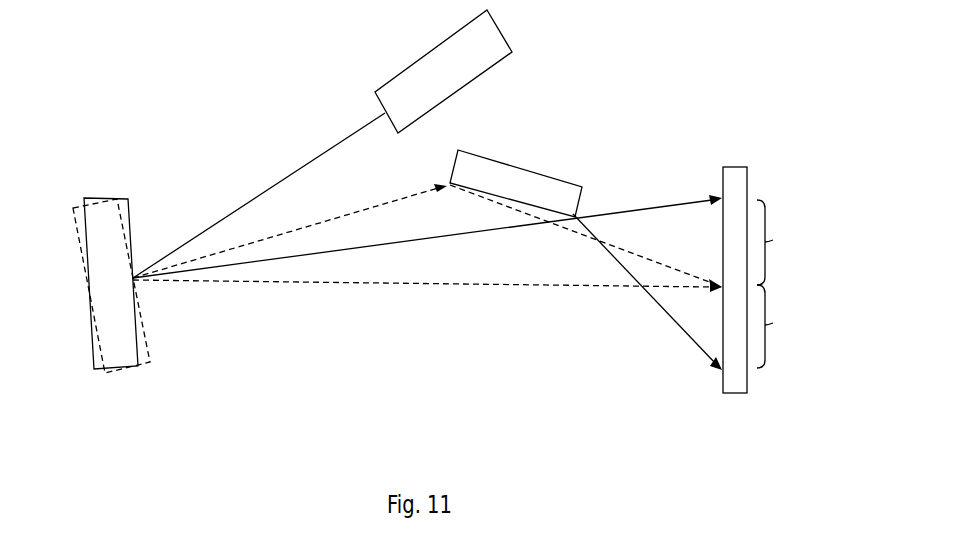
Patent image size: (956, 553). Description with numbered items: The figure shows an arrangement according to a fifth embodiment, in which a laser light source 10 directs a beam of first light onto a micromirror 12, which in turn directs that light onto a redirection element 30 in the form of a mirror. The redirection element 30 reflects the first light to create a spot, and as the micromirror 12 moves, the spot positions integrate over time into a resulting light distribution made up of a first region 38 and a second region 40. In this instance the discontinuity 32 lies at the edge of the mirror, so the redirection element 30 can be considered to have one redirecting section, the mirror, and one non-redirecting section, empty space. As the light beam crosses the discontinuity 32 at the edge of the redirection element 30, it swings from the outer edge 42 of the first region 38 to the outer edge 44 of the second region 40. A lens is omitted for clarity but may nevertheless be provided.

The laser light source 10 is at (425, 68).
The micromirror 12 is at (100, 240).
The redirection element 30 is at (495, 165).
The discontinuity 32 is at (578, 212).
The first region 38 is at (787, 326).
The second region 40 is at (770, 280).
The outer edge of first region 42 is at (719, 372).
The outer edge of second region 44 is at (718, 194).